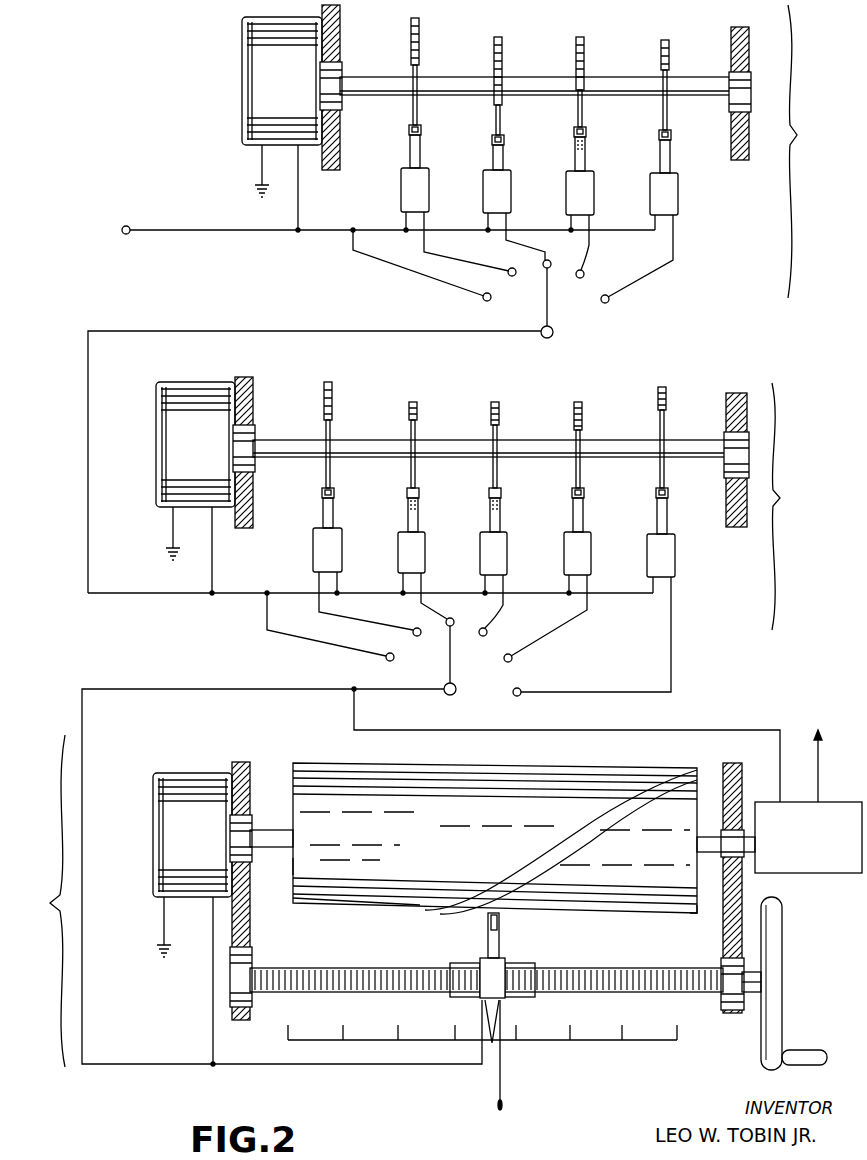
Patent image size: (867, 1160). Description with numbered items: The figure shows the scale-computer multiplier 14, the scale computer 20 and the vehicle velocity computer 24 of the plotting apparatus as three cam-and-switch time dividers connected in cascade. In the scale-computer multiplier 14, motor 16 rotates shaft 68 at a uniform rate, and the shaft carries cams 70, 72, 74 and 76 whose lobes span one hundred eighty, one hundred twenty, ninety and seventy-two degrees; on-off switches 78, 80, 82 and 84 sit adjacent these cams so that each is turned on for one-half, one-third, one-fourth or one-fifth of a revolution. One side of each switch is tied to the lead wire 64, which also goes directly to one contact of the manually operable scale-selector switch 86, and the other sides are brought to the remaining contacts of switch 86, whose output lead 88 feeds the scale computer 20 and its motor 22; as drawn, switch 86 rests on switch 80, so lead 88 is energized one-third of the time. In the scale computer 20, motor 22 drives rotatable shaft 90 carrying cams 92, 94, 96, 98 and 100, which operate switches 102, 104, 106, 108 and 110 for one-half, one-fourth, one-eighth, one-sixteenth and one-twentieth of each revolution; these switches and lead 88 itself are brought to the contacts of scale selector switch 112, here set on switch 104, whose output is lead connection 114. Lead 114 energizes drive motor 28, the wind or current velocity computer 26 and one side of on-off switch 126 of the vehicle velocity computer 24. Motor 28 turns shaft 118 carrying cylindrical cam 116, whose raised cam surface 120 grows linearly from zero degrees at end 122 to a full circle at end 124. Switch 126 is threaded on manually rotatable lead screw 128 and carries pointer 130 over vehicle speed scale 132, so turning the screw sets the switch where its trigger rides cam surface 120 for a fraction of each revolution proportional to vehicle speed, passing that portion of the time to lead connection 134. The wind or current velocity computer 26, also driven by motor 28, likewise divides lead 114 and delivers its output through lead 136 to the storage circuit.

The scale-computer multiplier 14 is at (811, 151).
The scale-computer multiplier motor 16 is at (240, 50).
The scale computer 20 is at (793, 506).
The motor 22 is at (156, 398).
The vehicle velocity computer 24 is at (34, 901).
The wind or current velocity computer 26 is at (822, 876).
The drive motor 28 is at (155, 782).
The lead wire 64 is at (201, 228).
The shaft 68 is at (360, 76).
The cam 70 is at (420, 54).
The cam 72 is at (503, 56).
The cam 74 is at (586, 56).
The cam 76 is at (671, 58).
The on-off switch 78 is at (429, 200).
The on-off switch 80 is at (511, 200).
The on-off switch 82 is at (594, 203).
The on-off switch 84 is at (678, 205).
The scale-selector switch 86 is at (672, 305).
The output lead 88 is at (232, 330).
The rotatable shaft 90 is at (276, 440).
The cam 92 is at (333, 418).
The cam 94 is at (418, 418).
The cam 96 is at (500, 420).
The cam 98 is at (583, 420).
The cam 100 is at (667, 420).
The switch 102 is at (342, 560).
The switch 104 is at (420, 553).
The switch 106 is at (503, 553).
The switch 108 is at (588, 555).
The switch 110 is at (672, 558).
The scale selector switch 112 is at (322, 660).
The lead connection 114 is at (400, 692).
The cylindrical cam 116 is at (325, 902).
The shaft 118 is at (282, 832).
The raised cam surface 120 is at (631, 860).
The end of the cam 122 is at (294, 866).
The end of the cam 124 is at (700, 912).
The on-off switch 126 is at (500, 970).
The lead screw 128 is at (345, 970).
The pointer 130 is at (490, 1022).
The vehicle speed scale 132 is at (588, 1045).
The lead connection 134 is at (500, 1088).
The lead 136 is at (819, 772).